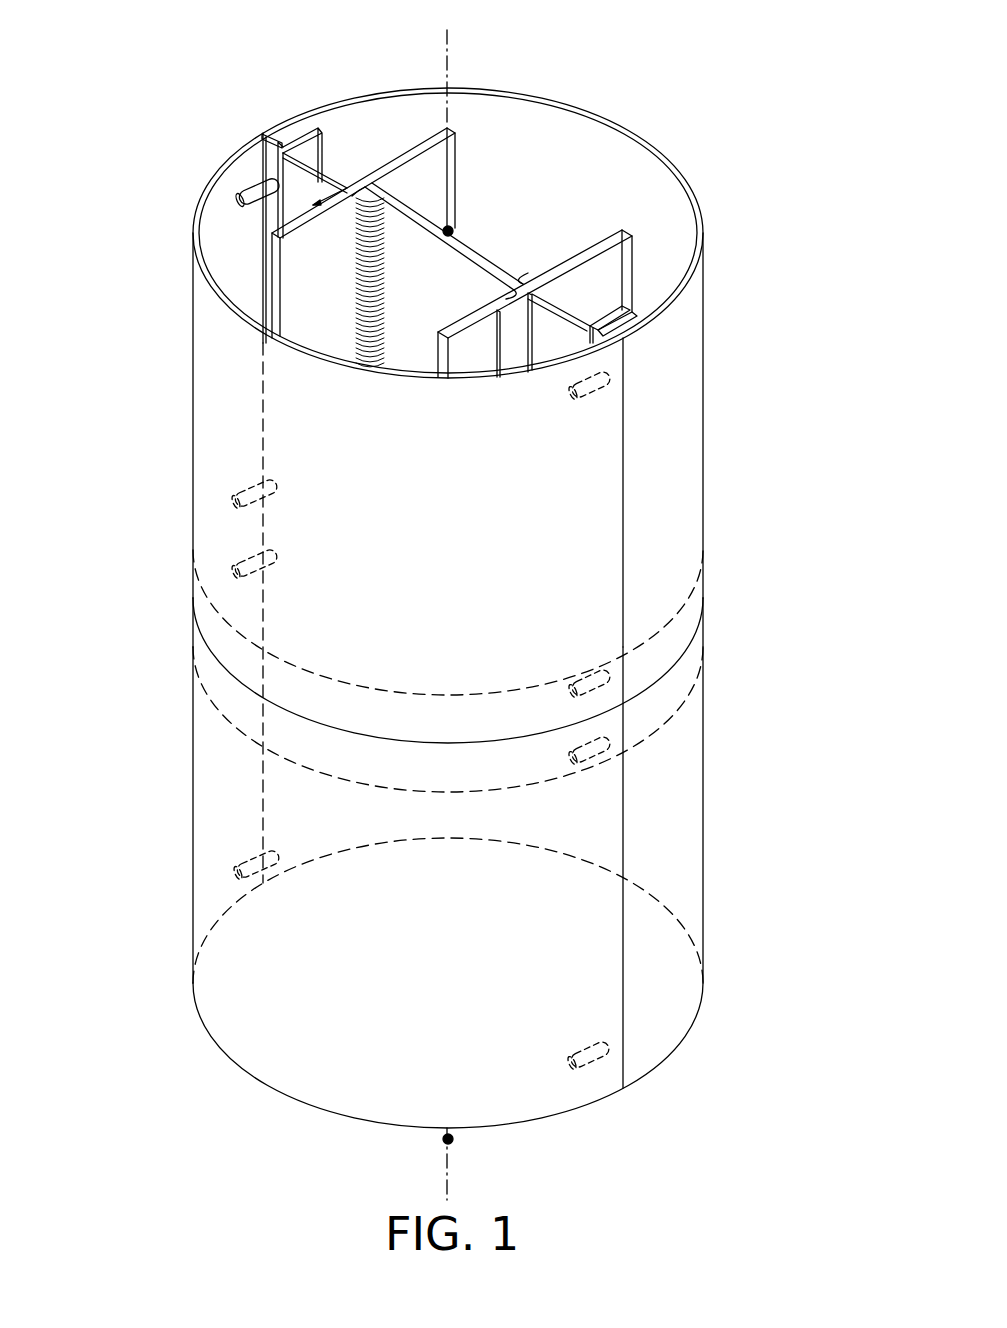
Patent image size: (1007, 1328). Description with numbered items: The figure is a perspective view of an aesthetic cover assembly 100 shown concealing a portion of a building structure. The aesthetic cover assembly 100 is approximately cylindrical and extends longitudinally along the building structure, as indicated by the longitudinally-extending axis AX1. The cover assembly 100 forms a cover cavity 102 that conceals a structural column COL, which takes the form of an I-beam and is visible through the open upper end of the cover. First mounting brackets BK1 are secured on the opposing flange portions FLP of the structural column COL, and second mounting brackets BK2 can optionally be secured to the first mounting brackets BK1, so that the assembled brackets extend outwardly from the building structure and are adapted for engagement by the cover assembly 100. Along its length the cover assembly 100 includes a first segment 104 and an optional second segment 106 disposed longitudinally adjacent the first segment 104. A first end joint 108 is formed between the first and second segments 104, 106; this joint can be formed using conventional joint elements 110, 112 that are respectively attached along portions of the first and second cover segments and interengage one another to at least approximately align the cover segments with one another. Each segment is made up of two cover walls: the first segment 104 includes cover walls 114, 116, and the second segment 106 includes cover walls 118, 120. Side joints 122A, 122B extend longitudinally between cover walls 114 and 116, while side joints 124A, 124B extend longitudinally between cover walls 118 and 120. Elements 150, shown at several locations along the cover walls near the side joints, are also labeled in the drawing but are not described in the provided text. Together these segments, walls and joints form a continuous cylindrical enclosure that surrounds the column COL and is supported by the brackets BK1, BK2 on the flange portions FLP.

The aesthetic cover assembly 100 is at (672, 118).
The cover cavity 102 is at (533, 144).
The first segment 104 is at (184, 469).
The second segment 106 is at (184, 879).
The first end joint 108 is at (200, 652).
The joint element 110 is at (442, 692).
The joint element 112 is at (378, 795).
The cover wall 114 is at (464, 542).
The cover wall 116 is at (683, 509).
The cover wall 118 is at (335, 819).
The cover wall 120 is at (684, 819).
The side joint 122A is at (623, 592).
The side joint 122B is at (262, 230).
The side joint 124A is at (623, 993).
The side joint 124B is at (262, 772).
The pin 150 is at (240, 190).
The longitudinally-extending axis AX1 is at (450, 52).
The first mounting bracket BK1 is at (320, 182).
The second mounting bracket BK2 is at (268, 150).
The structural column COL is at (462, 236).
The flange portion FLP is at (330, 300).